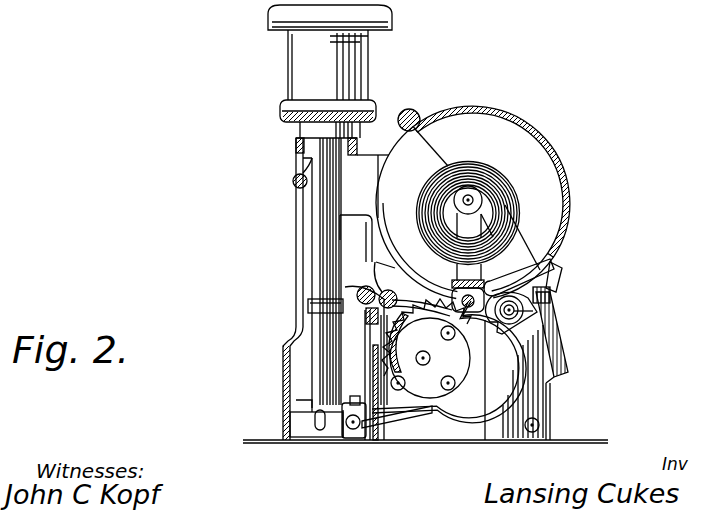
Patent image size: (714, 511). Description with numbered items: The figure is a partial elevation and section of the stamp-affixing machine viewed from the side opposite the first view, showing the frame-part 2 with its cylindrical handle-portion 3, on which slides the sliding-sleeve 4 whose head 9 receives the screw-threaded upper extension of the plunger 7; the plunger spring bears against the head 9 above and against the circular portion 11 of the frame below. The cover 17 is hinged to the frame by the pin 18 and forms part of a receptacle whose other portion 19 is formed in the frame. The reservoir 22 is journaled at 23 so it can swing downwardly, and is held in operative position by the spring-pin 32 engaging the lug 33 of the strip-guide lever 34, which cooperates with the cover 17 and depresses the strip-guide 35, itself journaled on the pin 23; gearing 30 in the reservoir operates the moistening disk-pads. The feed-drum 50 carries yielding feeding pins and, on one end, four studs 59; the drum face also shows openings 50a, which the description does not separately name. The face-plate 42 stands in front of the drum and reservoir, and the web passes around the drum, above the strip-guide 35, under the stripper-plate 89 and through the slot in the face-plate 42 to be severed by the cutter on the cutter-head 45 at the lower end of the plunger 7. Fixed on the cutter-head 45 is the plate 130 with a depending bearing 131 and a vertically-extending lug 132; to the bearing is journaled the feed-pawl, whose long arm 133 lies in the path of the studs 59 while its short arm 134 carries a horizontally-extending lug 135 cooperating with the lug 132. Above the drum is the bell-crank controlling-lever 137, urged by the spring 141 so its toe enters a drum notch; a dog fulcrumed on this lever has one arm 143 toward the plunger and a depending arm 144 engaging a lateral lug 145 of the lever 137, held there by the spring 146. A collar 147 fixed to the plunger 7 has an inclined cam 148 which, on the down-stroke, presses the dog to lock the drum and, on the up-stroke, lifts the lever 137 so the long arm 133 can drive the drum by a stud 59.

The head 9 is at (386, 22).
The sliding-sleeve 4 is at (368, 66).
The cylindrical handle-portion 3 is at (298, 129).
The frame-part 2 is at (301, 268).
The circular portion 11 is at (294, 166).
The frame-portion of receptacle 19 is at (375, 185).
The plunger 7 is at (322, 207).
The cover 17 is at (552, 152).
The pin 18 is at (414, 113).
The spring 146 is at (392, 292).
The spring 141 is at (377, 245).
The inclined surface or cam 148 is at (383, 268).
The horizontally-extending lug 135 is at (384, 266).
The controlling-lever 137 is at (387, 316).
The arm of actuating-dog 143 is at (346, 290).
The cam-projection or collar 147 is at (357, 298).
The lug 145 is at (372, 318).
The arm of actuating-dog 144 is at (390, 322).
The feed-drum 50 is at (466, 367).
The holes 50a is at (423, 358).
The studs 59 is at (454, 386).
The gearing 30 is at (480, 331).
The strip-guide 35 is at (484, 337).
The strip-guide lever 34 is at (553, 258).
The lug 33 is at (551, 277).
The spring-pin 32 is at (551, 295).
The journal 23 is at (533, 311).
The reservoir 22 is at (546, 405).
The vertically-extending lug 132 is at (358, 400).
The plate 130 is at (308, 410).
The cutter-head 45 is at (300, 422).
The short arm of feed-pawl 134 is at (342, 415).
The depending bearing 131 is at (348, 440).
The face-plate 42 is at (365, 442).
The stripper-plate 89 is at (388, 433).
The long arm of feed-pawl 133 is at (381, 427).